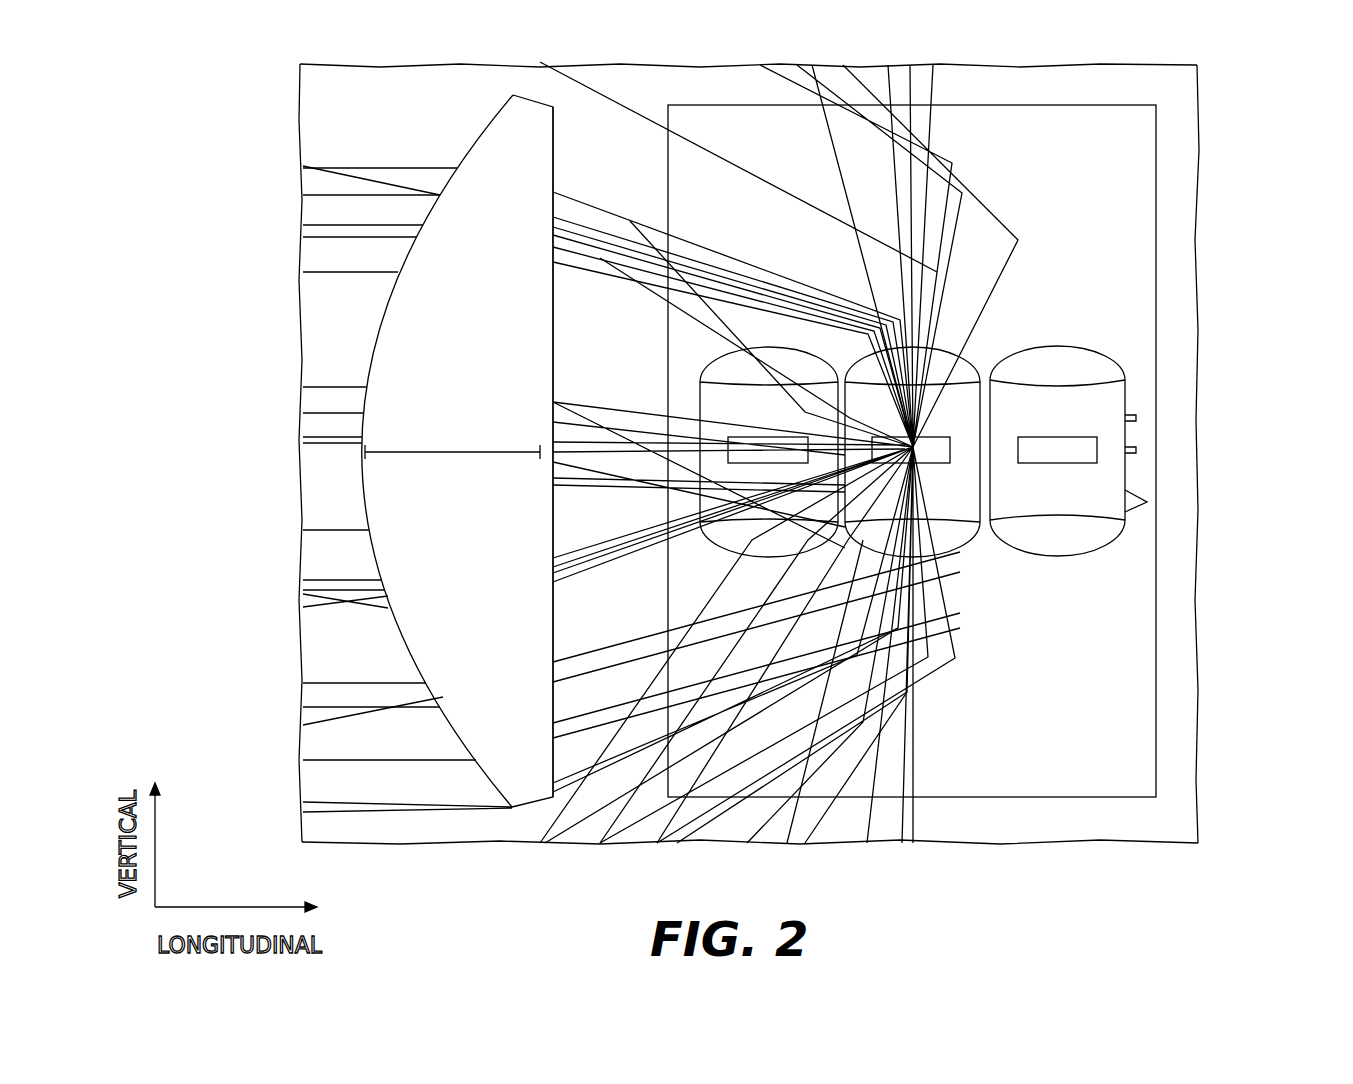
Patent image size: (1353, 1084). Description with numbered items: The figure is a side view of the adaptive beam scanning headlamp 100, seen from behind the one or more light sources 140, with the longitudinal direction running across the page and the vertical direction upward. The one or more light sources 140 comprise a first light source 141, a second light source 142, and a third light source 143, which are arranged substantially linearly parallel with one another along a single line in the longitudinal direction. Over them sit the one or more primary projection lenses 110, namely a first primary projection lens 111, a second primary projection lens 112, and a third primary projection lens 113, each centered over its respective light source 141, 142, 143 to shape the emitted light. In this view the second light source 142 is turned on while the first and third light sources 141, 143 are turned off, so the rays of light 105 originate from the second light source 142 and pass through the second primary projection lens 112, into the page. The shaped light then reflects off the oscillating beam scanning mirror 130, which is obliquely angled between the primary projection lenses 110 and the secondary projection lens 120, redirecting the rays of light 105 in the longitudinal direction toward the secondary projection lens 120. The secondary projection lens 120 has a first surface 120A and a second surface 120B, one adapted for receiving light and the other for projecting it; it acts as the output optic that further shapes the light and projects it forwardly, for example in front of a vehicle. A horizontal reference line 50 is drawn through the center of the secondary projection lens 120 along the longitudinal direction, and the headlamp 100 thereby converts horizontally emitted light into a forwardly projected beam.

The adaptive beam scanning headlamp 100 is at (239, 105).
The rays of light 105 is at (418, 828).
The primary projection lenses 110 is at (983, 487).
The first primary projection lens 111 is at (765, 475).
The second primary projection lens 112 is at (957, 503).
The third primary projection lens 113 is at (1068, 487).
The secondary projection lens 120 is at (418, 447).
The first surface 120A is at (553, 163).
The second surface 120B is at (368, 368).
The oscillating beam scanning mirror 130 is at (1145, 215).
The light sources 140 is at (1203, 448).
The first light source 141 is at (762, 448).
The second light source 142 is at (937, 455).
The third light source 143 is at (1073, 437).
The optical axis 50 is at (452, 443).